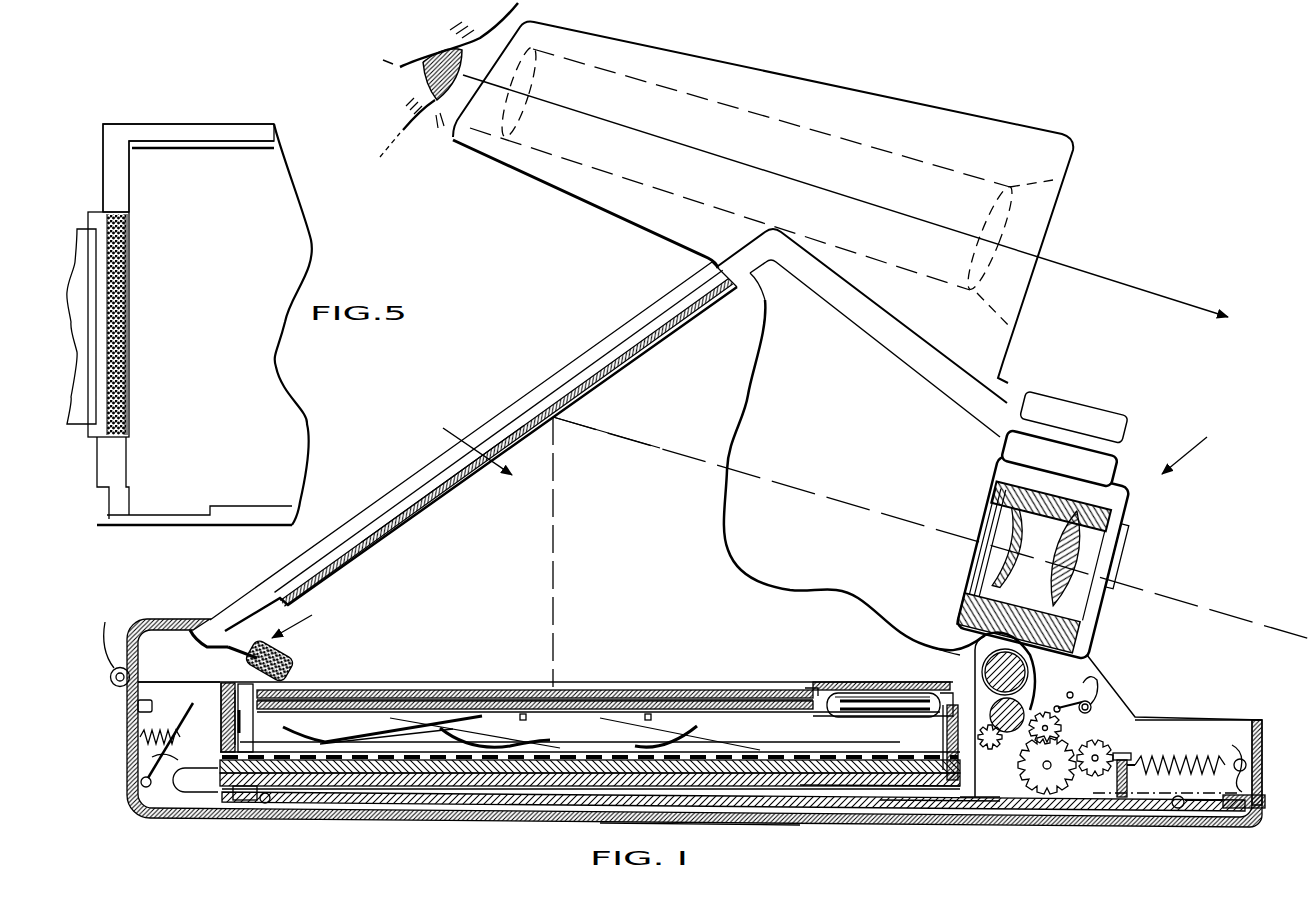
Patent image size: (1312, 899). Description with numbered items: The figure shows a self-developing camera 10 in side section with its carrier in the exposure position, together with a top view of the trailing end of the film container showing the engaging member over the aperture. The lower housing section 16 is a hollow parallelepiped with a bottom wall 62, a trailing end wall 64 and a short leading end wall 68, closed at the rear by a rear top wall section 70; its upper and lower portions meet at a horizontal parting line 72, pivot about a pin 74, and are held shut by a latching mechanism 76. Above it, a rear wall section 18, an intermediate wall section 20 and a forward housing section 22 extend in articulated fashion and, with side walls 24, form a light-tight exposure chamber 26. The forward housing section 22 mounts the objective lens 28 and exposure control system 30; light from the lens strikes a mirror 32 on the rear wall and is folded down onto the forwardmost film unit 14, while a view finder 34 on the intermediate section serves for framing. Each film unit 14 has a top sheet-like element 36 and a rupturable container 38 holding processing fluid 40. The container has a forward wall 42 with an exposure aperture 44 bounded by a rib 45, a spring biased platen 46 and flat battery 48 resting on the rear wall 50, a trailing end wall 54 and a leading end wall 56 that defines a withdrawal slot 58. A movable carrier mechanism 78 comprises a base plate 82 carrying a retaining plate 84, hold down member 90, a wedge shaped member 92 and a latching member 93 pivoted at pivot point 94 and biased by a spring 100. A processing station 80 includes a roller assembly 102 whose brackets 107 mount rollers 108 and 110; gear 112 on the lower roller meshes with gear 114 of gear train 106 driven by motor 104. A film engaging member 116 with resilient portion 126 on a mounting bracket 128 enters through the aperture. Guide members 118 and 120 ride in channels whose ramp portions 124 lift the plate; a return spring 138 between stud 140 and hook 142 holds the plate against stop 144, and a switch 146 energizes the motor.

In FIG. 1, the self-developing camera 10 is at (1196, 443).
In FIG. 1, the self-developing film units 14 is at (362, 718).
In FIG. 1, the lower housing section 16 is at (778, 826).
In FIG. 1, the rear wall section 18 is at (400, 497).
In FIG. 5, the intermediate wall section 20 is at (284, 118).
In FIG. 1, the intermediate wall section 20 is at (893, 345).
In FIG. 1, the forward housing section 22 is at (1128, 470).
In FIG. 1, the enclosing side walls 24 is at (424, 577).
In FIG. 1, the light-tight exposure chamber 26 is at (466, 441).
In FIG. 1, the adjustable focus objective lens 28 is at (1098, 588).
In FIG. 1, the exposure control system 30 is at (1075, 416).
In FIG. 1, the mirror 32 is at (440, 500).
In FIG. 1, the view finder 34 is at (950, 112).
In FIG. 1, the top sheet-like element 36 is at (480, 688).
In FIG. 1, the compressibly rupturable container 38 is at (925, 692).
In FIG. 1, the fluid processing composition 40 is at (856, 692).
In FIG. 5, the forward wall 42 is at (237, 125).
In FIG. 1, the forward wall 42 is at (835, 682).
In FIG. 5, the exposure aperture 44 is at (311, 164).
In FIG. 1, the exposure aperture 44 is at (820, 686).
In FIG. 1, the upstanding rib 45 is at (812, 688).
In FIG. 1, the spring biased platen 46 is at (590, 743).
In FIG. 1, the flat electrical battery 48 is at (578, 752).
In FIG. 1, the rear wall 50 is at (415, 770).
In FIG. 1, the trailing end wall 54 is at (244, 736).
In FIG. 1, the leading end wall 56 is at (947, 746).
In FIG. 1, the film withdrawal slot 58 is at (960, 692).
In FIG. 1, the bottom wall 62 is at (940, 814).
In FIG. 1, the trailing end wall 64 is at (135, 729).
In FIG. 1, the leading end wall 68 is at (1264, 740).
In FIG. 1, the rear top wall section 70 is at (195, 619).
In FIG. 1, the horizontal parting line 72 is at (150, 682).
In FIG. 1, the transverse shaft or pin 74 is at (104, 650).
In FIG. 1, the releasable latching mechanism 76 is at (1092, 682).
In FIG. 1, the movable carrier mechanism 78 is at (352, 822).
In FIG. 1, the film processing station 80 is at (1043, 702).
In FIG. 1, the carrier base plate 82 is at (452, 803).
In FIG. 1, the transverse retaining plate 84 is at (965, 800).
In FIG. 1, the transverse hold down member 90 is at (875, 690).
In FIG. 1, the tapered wedge shaped member 92 is at (876, 805).
In FIG. 1, the latching member 93 is at (179, 669).
In FIG. 1, the pivot point 94 is at (178, 736).
In FIG. 1, the spring 100 is at (216, 700).
In FIG. 1, the pressure applying roller assembly 102 is at (968, 652).
In FIG. 1, the electrical motor 104 is at (1182, 718).
In FIG. 1, the gear train assembly 106 is at (1124, 714).
In FIG. 1, the roller mounting brackets 107 is at (1000, 655).
In FIG. 1, the upper roller 108 is at (1034, 568).
In FIG. 1, the lower roller 110 is at (999, 730).
In FIG. 1, the gear 112 is at (1022, 768).
In FIG. 1, the gear 114 is at (1102, 734).
In FIG. 1, the film engaging member 116 is at (310, 616).
In FIG. 1, the leading end guide members 118 is at (1182, 810).
In FIG. 1, the trailing end guide members 120 is at (265, 805).
In FIG. 1, the ramp portions of channels 124 is at (228, 792).
In FIG. 5, the film engaging portion 126 is at (124, 255).
In FIG. 1, the film engaging portion 126 is at (300, 660).
In FIG. 5, the rigid mounting bracket 128 is at (75, 232).
In FIG. 1, the rigid mounting bracket 128 is at (231, 660).
In FIG. 1, the return spring 138 is at (1196, 764).
In FIG. 1, the upstanding stud 140 is at (1124, 760).
In FIG. 1, the hook 142 is at (1240, 758).
In FIG. 1, the adjustable stop 144 is at (1260, 798).
In FIG. 1, the electrical switch 146 is at (163, 751).